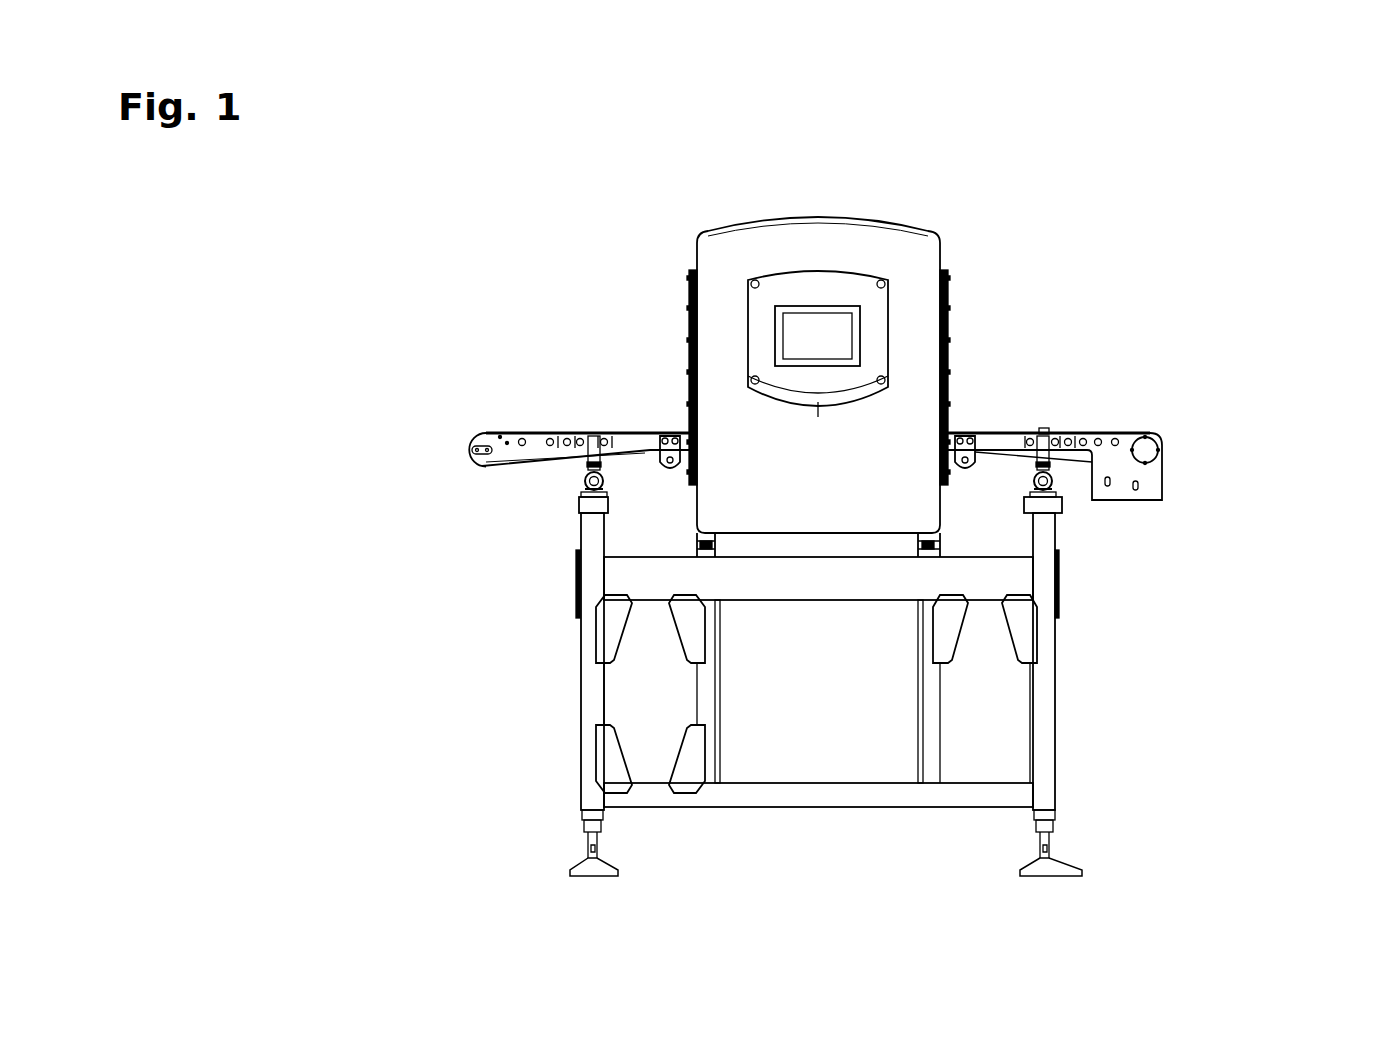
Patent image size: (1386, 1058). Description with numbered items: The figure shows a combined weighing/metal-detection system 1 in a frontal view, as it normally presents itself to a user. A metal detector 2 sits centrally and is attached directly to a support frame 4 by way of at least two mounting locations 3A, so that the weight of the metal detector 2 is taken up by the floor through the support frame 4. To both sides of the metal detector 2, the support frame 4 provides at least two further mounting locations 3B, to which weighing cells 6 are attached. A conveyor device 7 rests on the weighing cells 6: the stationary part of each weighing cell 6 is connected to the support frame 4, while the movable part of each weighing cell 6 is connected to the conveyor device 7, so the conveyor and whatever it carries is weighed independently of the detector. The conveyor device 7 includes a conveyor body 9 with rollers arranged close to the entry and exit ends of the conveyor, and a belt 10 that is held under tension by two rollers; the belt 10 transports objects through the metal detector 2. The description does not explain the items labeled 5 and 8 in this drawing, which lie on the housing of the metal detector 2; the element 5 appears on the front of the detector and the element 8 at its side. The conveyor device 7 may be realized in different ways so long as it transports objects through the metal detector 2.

The combined weighing/metal-detection system 1 is at (1218, 197).
The metal detector 2 is at (787, 197).
The mounting locations 3A is at (930, 548).
The mounting locations 3B is at (577, 515).
The support frame 4 is at (1055, 681).
The control panel with display 5 is at (888, 300).
The weighing cells 6 is at (568, 482).
The conveyor device 7 is at (442, 426).
The detector aperture side 8 is at (668, 337).
The conveyor body 9 is at (630, 440).
The belt 10 is at (530, 467).